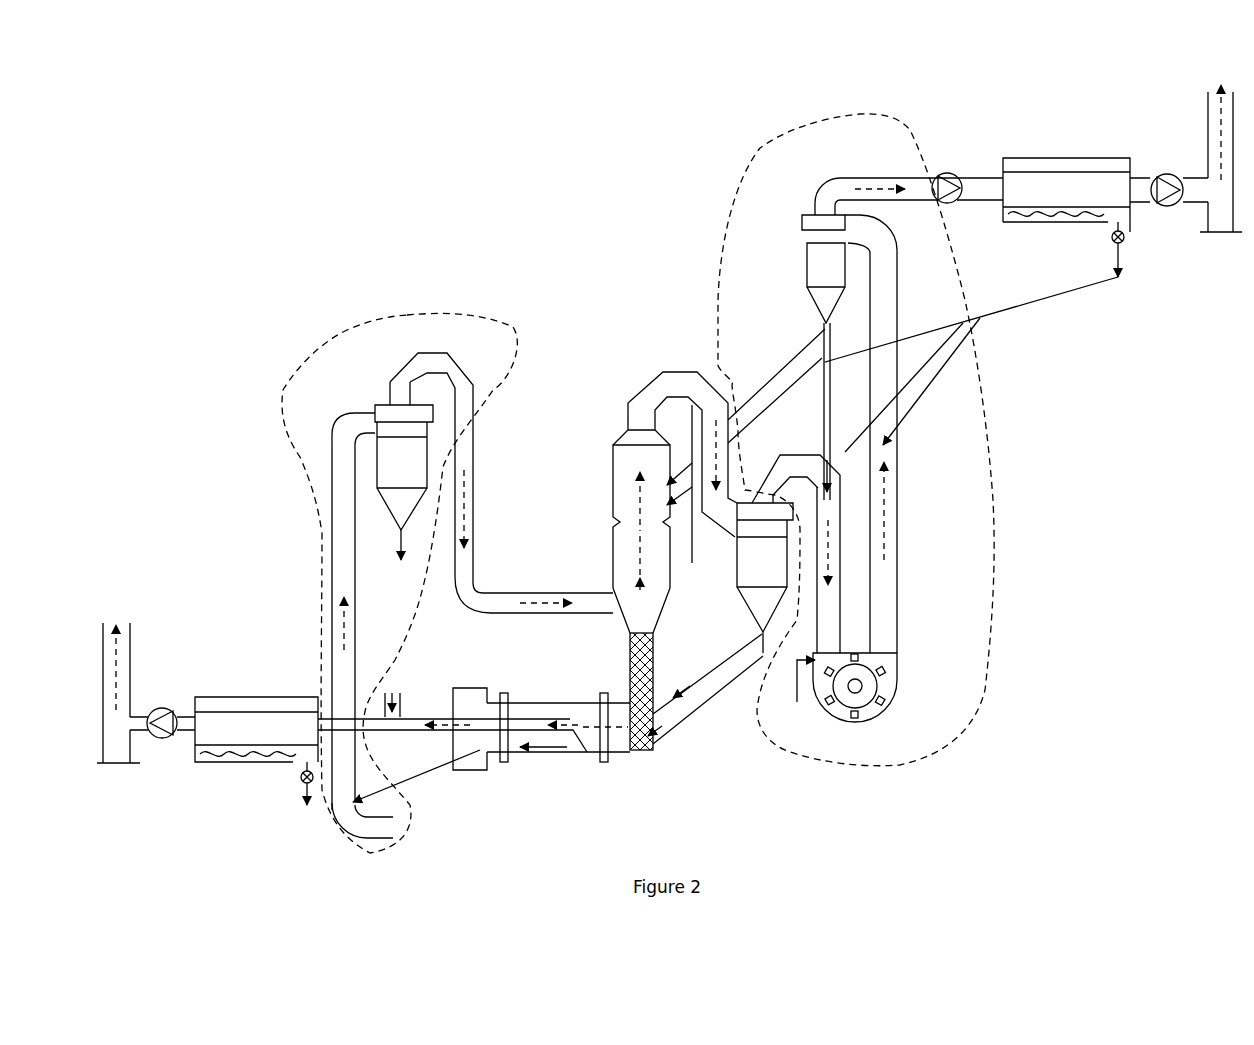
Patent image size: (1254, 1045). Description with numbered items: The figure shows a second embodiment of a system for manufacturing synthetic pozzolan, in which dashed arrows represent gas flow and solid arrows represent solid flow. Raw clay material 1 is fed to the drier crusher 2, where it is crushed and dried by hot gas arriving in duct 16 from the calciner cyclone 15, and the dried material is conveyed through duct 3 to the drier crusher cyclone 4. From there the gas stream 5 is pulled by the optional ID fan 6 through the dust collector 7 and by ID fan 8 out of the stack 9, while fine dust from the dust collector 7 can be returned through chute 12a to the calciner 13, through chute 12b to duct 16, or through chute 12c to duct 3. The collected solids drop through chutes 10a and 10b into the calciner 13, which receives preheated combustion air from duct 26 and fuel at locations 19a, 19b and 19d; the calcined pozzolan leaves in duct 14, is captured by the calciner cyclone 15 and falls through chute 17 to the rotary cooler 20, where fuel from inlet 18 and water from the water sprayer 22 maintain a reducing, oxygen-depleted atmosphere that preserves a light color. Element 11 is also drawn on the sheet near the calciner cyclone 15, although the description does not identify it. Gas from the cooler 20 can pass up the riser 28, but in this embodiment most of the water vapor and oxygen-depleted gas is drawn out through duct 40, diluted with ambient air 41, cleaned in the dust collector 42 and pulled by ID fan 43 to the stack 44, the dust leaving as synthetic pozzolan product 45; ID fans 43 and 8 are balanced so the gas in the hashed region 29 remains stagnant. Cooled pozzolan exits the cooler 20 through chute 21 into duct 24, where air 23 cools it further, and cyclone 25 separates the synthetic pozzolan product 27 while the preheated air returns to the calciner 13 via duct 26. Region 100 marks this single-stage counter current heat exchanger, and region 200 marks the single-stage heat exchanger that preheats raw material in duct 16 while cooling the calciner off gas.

The raw clay material 1 is at (797, 699).
The drier crusher 2 is at (897, 668).
The duct 3 is at (900, 492).
The drier crusher cyclone 4 is at (803, 258).
The gas stream 5 is at (863, 178).
The ID fan 6 is at (952, 172).
The dust collector 7 is at (1110, 158).
The ID fan 8 is at (1172, 206).
The stack 9 is at (1221, 134).
The chute 10a is at (692, 455).
The chute 10b is at (662, 597).
The cyclone separator 11 is at (826, 437).
The chute 12a is at (925, 334).
The chute 12b is at (910, 383).
The chute 12c is at (913, 407).
The calciner 13 is at (613, 455).
The duct 14 is at (692, 372).
The calciner cyclone 15 is at (737, 560).
The duct 16 is at (843, 590).
The chute 17 is at (703, 698).
The inlet 18 is at (716, 668).
The fuel location 19a is at (625, 577).
The fuel location 19b is at (625, 497).
The fuel location 19d is at (590, 600).
The cooler 20 is at (567, 752).
The chute 21 is at (437, 770).
The water sprayer 22 is at (437, 740).
The air 23 is at (402, 830).
The duct 24 is at (332, 422).
The cyclone 25 is at (386, 405).
The duct 26 is at (468, 372).
The synthetic pozzolan product 27 is at (400, 568).
The riser 28 is at (630, 645).
The region 29 is at (630, 680).
The duct 40 is at (425, 719).
The ambient air 41 is at (392, 693).
The dust collector 42 is at (255, 697).
The ID fan 43 is at (172, 712).
The stack 44 is at (118, 665).
The synthetic pozzolan product 45 is at (303, 808).
The region 100 is at (410, 315).
The region 200 is at (885, 116).